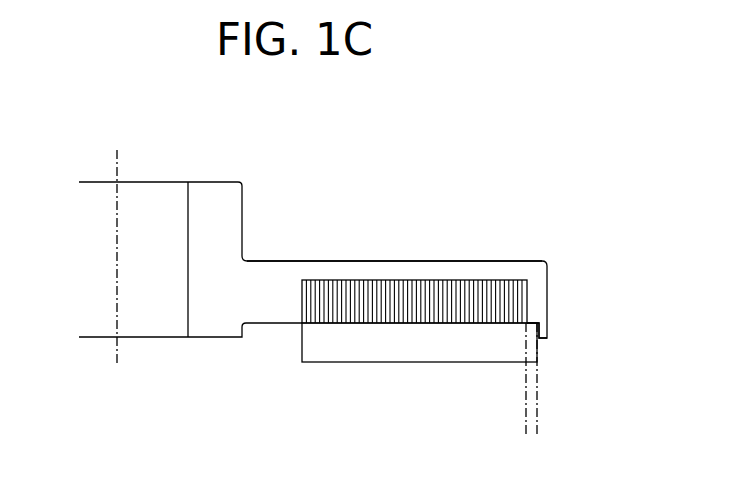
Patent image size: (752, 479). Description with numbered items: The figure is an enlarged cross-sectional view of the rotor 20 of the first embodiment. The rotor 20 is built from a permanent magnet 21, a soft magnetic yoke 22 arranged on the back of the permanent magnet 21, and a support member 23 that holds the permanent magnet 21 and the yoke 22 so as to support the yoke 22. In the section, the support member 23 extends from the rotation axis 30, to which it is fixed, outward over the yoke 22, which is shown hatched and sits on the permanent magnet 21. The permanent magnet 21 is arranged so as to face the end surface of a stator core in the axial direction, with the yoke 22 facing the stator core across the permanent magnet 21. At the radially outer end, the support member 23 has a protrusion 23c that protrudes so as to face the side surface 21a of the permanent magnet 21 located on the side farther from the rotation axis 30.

The rotor 20 is at (210, 175).
The permanent magnet 21 is at (308, 352).
The side surface 21a is at (538, 356).
The yoke 22 is at (413, 285).
The support member 23 is at (302, 263).
The protrusion 23c is at (546, 325).
The rotation axis 30 is at (117, 342).